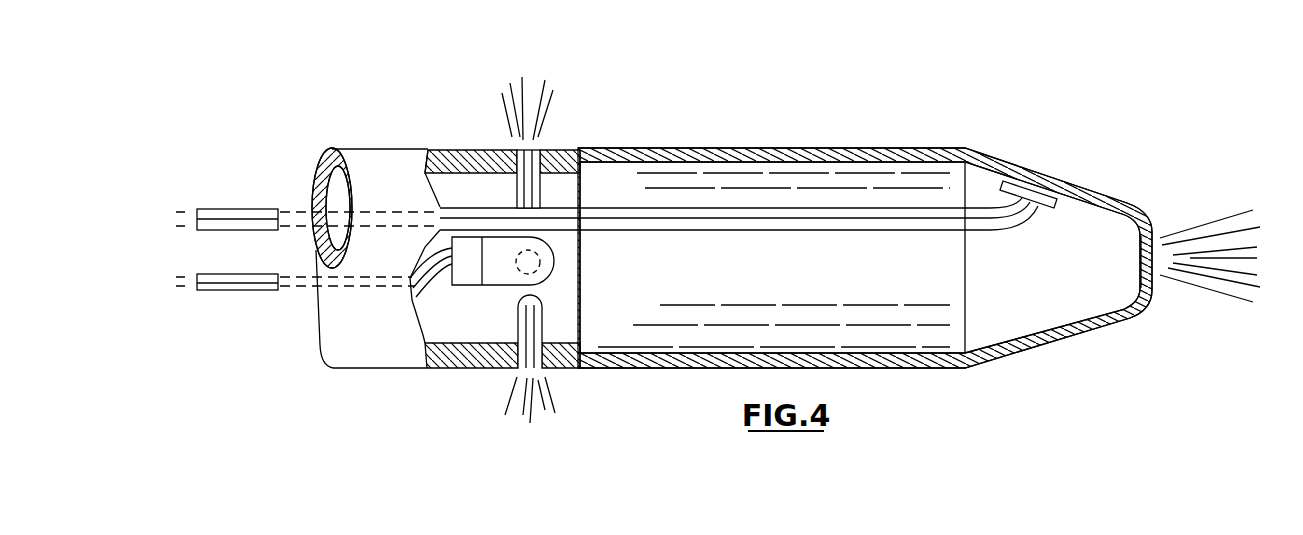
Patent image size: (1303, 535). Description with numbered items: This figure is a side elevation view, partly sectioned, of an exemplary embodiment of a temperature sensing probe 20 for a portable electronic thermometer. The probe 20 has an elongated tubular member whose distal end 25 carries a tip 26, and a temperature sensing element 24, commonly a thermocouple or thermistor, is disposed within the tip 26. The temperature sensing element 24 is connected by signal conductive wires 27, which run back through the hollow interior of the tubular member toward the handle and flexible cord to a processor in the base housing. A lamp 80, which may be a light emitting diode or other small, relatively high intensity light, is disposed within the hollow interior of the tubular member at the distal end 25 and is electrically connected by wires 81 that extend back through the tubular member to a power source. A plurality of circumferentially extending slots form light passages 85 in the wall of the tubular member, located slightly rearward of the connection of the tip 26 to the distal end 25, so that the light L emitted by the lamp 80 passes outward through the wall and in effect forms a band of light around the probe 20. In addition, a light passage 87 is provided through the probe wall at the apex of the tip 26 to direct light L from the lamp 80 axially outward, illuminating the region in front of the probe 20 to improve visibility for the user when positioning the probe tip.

The temperature sensing probe 20 is at (333, 66).
The temperature sensing element 24 is at (1046, 207).
The distal end 25 is at (376, 148).
The tip 26 is at (879, 142).
The signal conductive wires 27 is at (242, 209).
The lamp 80 is at (495, 287).
The wires 81 is at (238, 290).
The light passage 85 is at (533, 191).
The light passage 87 is at (1138, 258).
The light L is at (541, 110).